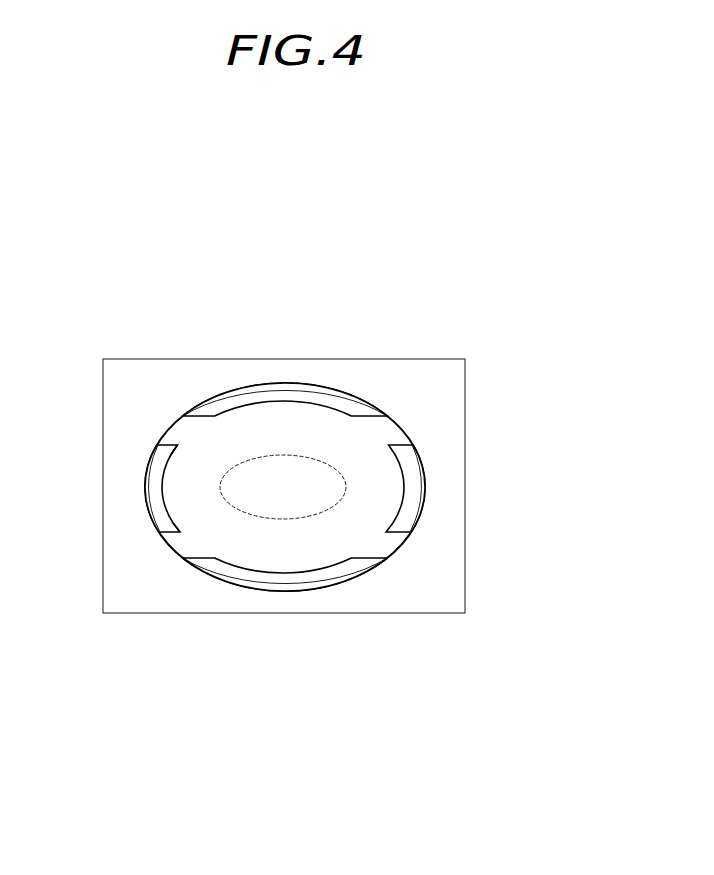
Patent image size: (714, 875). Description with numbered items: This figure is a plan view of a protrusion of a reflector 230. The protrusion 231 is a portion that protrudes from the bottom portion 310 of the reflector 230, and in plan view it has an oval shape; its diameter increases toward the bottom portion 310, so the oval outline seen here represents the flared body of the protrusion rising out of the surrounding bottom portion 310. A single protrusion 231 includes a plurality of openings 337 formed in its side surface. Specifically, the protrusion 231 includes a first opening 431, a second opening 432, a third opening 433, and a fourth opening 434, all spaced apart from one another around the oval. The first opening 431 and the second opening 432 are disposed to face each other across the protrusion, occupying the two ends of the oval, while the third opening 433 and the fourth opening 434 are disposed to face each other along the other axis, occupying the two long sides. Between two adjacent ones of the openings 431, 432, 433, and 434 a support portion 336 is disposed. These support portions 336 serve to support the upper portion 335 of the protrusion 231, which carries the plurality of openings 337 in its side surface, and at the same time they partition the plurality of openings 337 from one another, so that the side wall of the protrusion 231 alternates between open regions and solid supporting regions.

The reflector 230 is at (399, 337).
The bottom portion 310 is at (452, 489).
The protrusion 231 is at (277, 707).
The openings 337 is at (378, 662).
The first opening 431 is at (157, 498).
The second opening 432 is at (414, 488).
The third opening 433 is at (285, 578).
The fourth opening 434 is at (240, 403).
The upper portion 335 is at (190, 476).
The support portion 336 is at (177, 542).